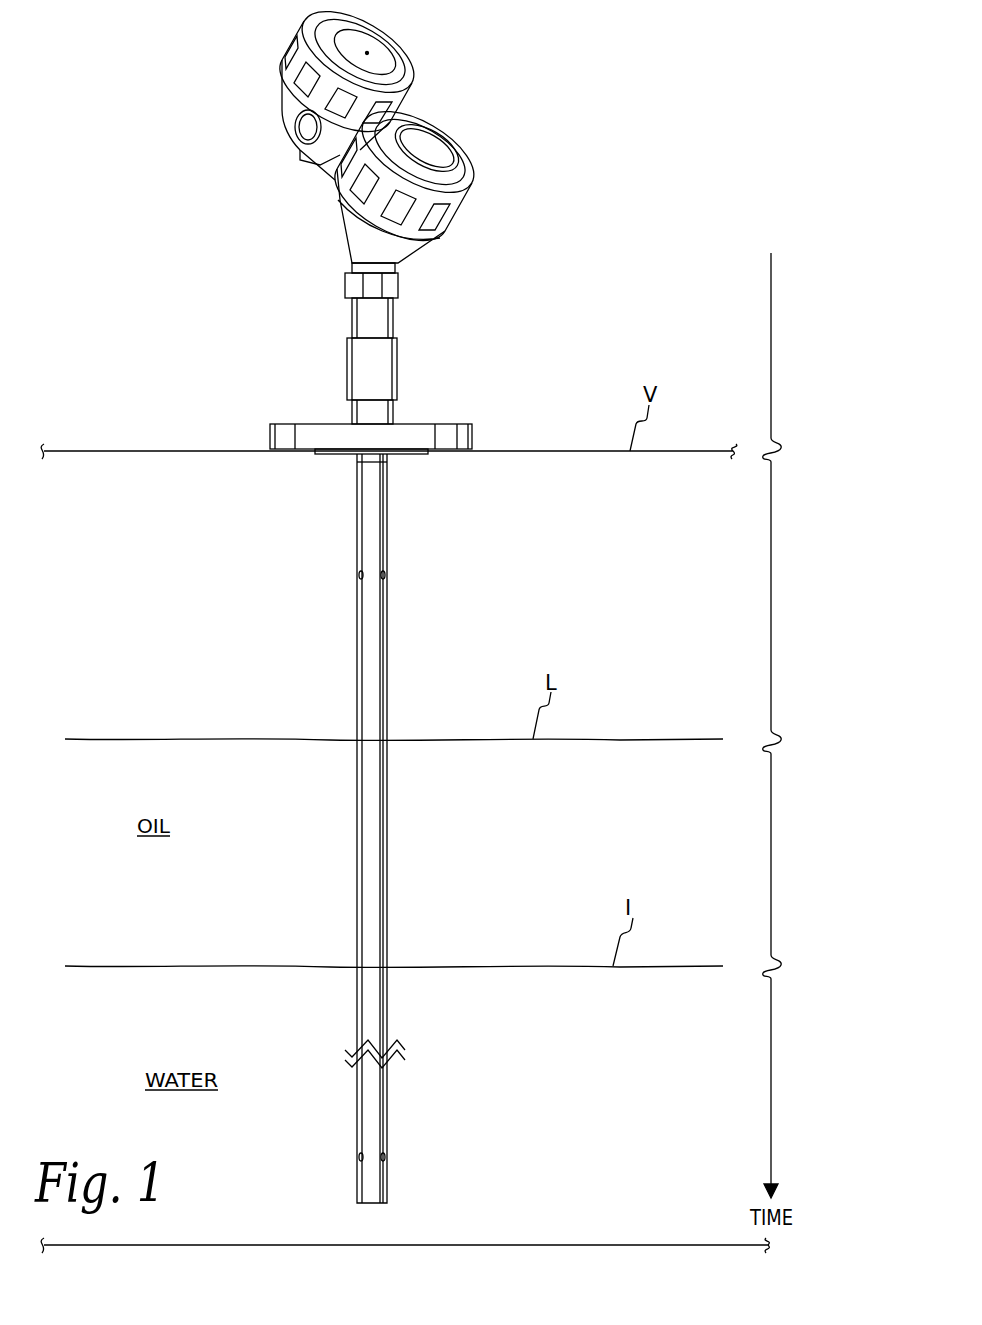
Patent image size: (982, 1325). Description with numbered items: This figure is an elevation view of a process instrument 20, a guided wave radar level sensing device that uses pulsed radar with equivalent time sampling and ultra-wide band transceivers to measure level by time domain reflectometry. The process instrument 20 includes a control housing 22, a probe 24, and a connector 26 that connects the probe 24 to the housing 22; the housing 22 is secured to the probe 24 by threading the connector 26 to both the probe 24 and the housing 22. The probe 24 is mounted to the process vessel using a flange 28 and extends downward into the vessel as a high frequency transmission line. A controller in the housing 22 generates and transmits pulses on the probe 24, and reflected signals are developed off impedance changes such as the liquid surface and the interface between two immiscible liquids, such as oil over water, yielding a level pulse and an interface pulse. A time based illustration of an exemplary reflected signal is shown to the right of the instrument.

The process instrument 20 is at (496, 137).
The control housing 22 is at (460, 242).
The probe 24 is at (401, 612).
The connector 26 is at (397, 363).
The flange 28 is at (412, 431).